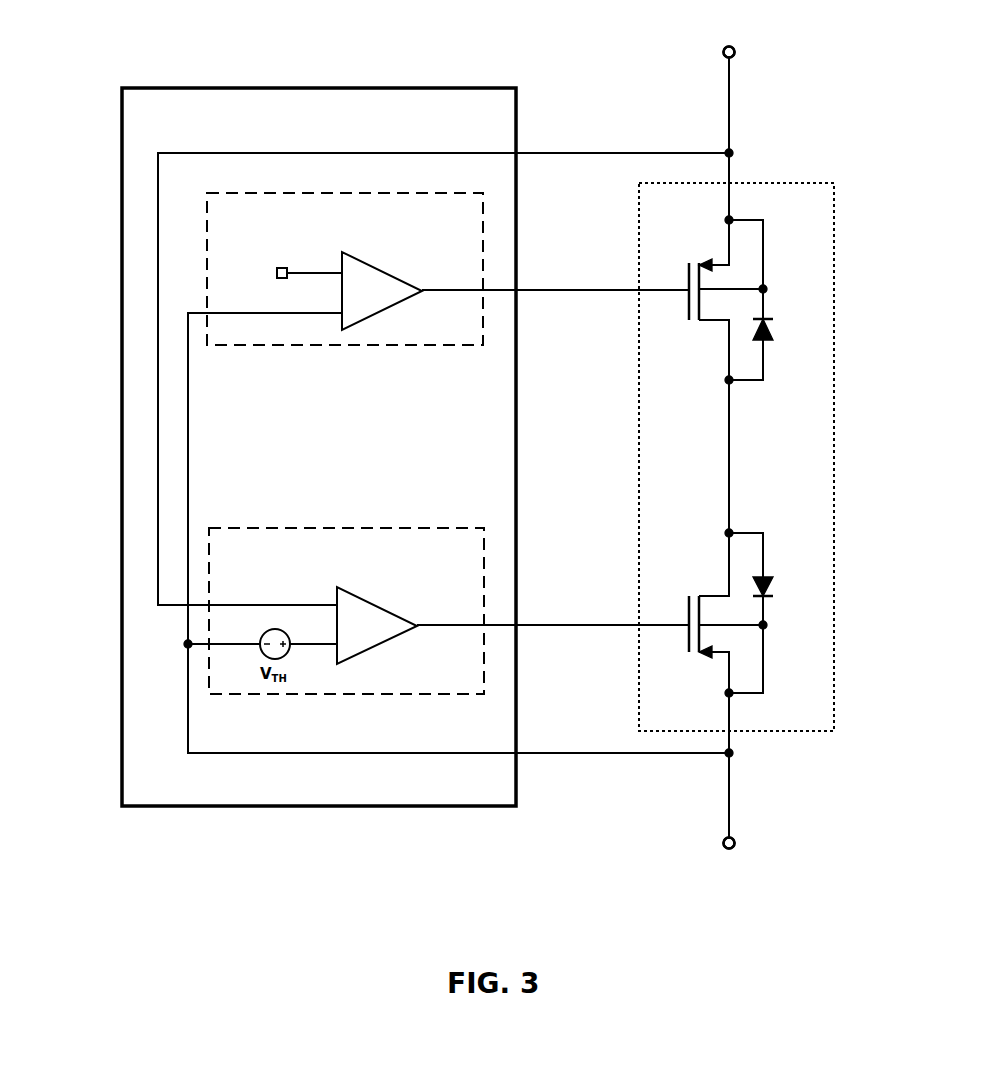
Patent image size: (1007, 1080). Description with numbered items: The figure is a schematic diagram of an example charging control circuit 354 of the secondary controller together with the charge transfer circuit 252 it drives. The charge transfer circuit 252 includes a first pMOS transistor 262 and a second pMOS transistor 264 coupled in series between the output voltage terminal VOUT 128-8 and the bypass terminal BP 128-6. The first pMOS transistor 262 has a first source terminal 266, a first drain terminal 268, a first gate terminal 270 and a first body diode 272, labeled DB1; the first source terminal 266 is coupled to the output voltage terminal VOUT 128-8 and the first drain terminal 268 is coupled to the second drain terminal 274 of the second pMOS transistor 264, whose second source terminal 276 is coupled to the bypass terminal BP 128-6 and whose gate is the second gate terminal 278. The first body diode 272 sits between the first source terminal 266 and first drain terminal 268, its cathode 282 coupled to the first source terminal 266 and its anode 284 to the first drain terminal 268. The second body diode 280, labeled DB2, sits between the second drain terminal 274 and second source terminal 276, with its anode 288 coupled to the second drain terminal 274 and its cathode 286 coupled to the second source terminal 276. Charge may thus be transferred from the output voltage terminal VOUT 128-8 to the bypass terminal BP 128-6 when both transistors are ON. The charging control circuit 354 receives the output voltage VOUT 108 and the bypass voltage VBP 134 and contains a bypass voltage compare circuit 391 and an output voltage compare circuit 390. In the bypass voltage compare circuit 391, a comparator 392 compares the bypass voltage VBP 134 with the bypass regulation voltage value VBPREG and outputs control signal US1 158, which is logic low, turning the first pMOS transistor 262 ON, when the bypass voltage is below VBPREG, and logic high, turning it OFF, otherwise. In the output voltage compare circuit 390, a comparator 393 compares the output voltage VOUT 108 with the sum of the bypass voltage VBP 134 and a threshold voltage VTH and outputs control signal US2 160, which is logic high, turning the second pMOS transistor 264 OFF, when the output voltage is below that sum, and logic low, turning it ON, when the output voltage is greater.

The output voltage 108 is at (740, 34).
The output voltage terminal 128-8 is at (724, 56).
The bypass terminal 128-6 is at (723, 842).
The bypass voltage 134 is at (722, 871).
The charging control circuit 354 is at (122, 88).
The bypass voltage compare circuit 391 is at (345, 292).
The comparator 392 is at (372, 262).
The output voltage compare circuit 390 is at (346, 587).
The comparator 393 is at (370, 598).
The control signal 158 is at (581, 277).
The control signal 160 is at (582, 610).
The charge transfer circuit 252 is at (834, 190).
The first pMOS transistor 262 is at (711, 303).
The first source terminal 266 is at (733, 220).
The first drain terminal 268 is at (733, 383).
The first gate terminal 270 is at (660, 294).
The first body diode 272 is at (790, 300).
The cathode 282 is at (768, 318).
The anode 284 is at (768, 344).
The second pMOS transistor 264 is at (711, 618).
The second drain terminal 274 is at (733, 533).
The second source terminal 276 is at (733, 696).
The second gate terminal 278 is at (660, 629).
The second body diode 280 is at (790, 613).
The anode 288 is at (768, 577).
The cathode 286 is at (768, 600).